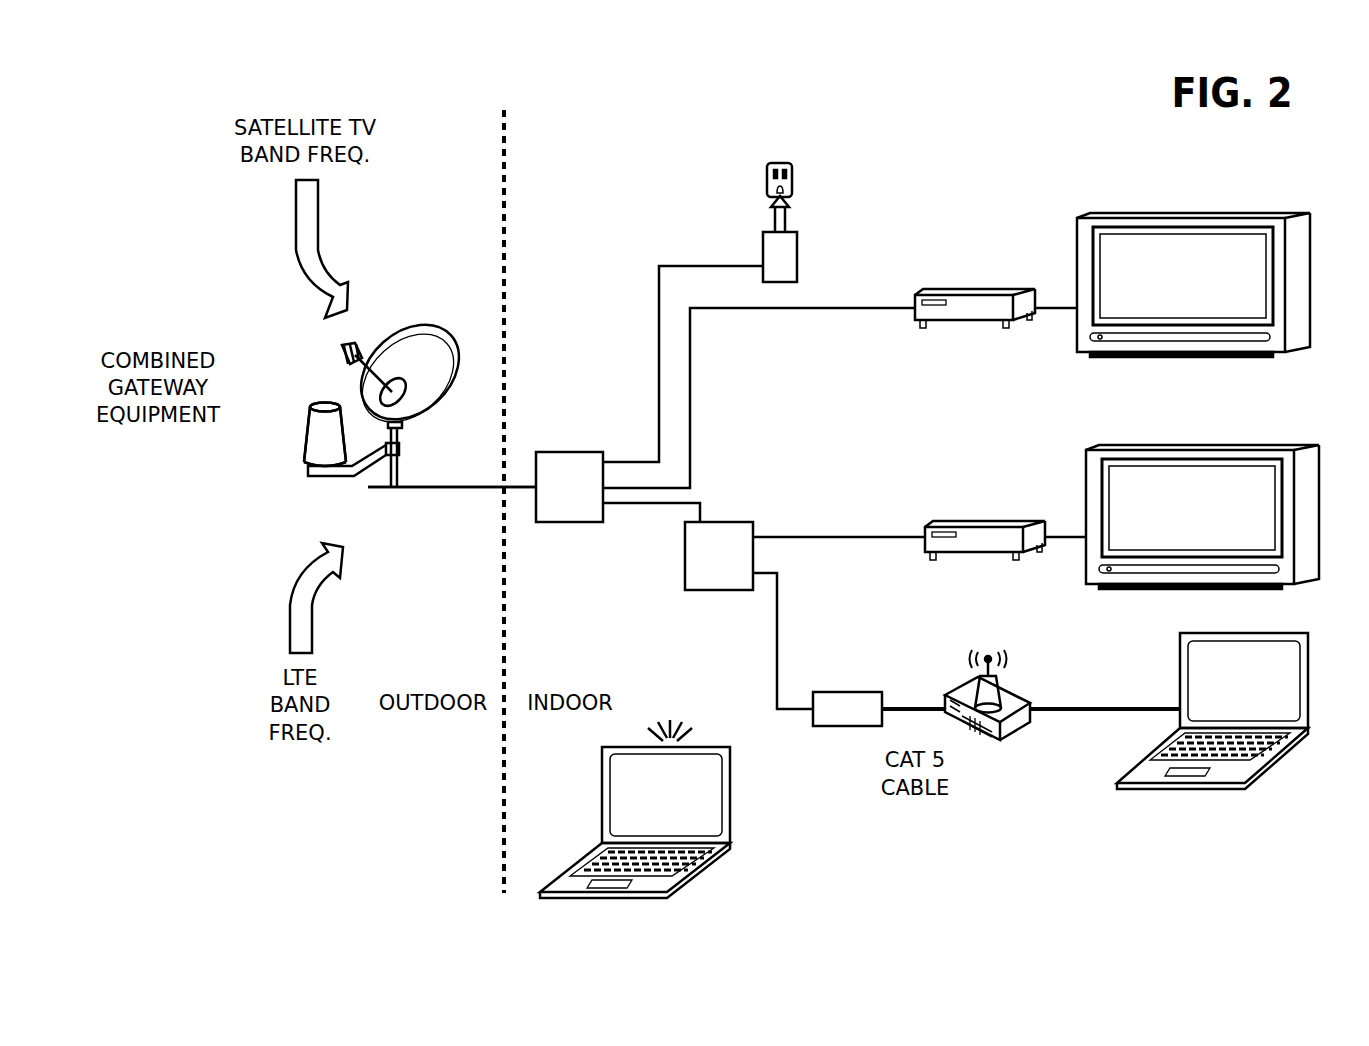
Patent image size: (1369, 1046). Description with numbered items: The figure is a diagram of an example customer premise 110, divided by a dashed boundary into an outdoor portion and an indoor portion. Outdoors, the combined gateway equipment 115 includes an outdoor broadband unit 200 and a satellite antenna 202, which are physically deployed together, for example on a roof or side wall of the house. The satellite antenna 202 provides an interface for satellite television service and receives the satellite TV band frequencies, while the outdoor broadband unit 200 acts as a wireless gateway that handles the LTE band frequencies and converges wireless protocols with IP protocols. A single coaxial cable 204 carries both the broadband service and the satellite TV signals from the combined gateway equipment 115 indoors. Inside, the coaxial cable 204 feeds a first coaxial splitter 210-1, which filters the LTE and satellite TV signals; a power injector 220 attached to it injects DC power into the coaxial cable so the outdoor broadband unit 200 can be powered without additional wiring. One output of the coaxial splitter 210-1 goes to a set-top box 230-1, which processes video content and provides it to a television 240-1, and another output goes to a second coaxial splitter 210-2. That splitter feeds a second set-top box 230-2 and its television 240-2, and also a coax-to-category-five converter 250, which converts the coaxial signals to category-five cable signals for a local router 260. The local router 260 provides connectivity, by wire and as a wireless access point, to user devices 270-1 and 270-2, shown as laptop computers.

The customer premise 110 is at (190, 62).
The combined gateway equipment 115 is at (280, 303).
The outdoor broadband unit 200 is at (312, 478).
The satellite antenna 202 is at (432, 350).
The coaxial cable 204 is at (433, 487).
The coaxial splitter 210-1 is at (570, 452).
The coaxial splitter 210-2 is at (735, 522).
The power injector 220 is at (763, 247).
The set-top box (STB) 230-1 is at (942, 294).
The set-top box (STB) 230-2 is at (952, 524).
The television 240-1 is at (1243, 217).
The television 240-2 is at (1252, 449).
The coax/Cat 5 converter 250 is at (862, 692).
The local router 260 is at (1008, 750).
The user device 270-1 is at (1180, 673).
The user device 270-2 is at (708, 866).